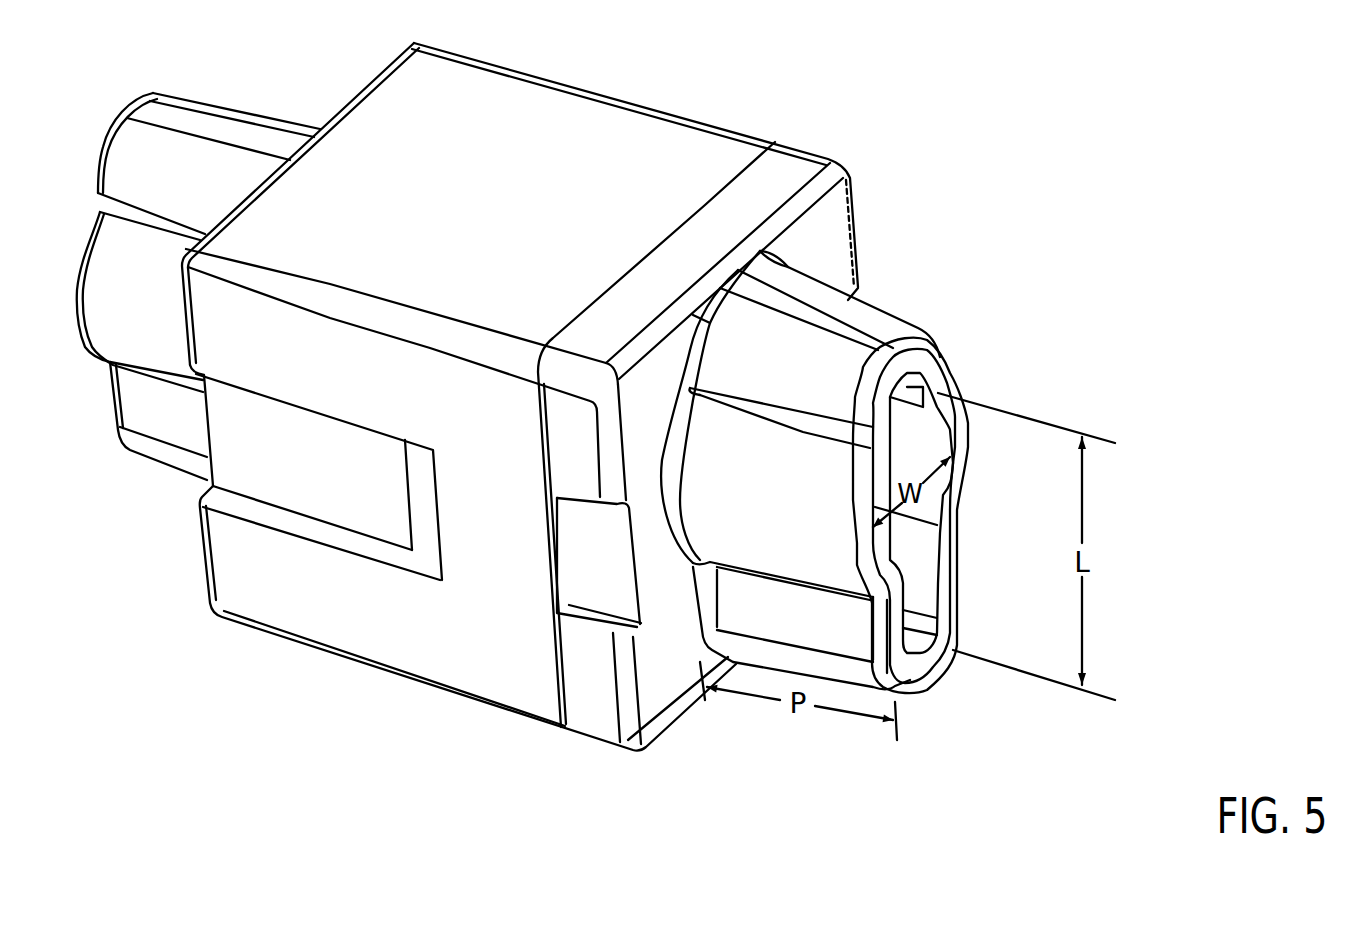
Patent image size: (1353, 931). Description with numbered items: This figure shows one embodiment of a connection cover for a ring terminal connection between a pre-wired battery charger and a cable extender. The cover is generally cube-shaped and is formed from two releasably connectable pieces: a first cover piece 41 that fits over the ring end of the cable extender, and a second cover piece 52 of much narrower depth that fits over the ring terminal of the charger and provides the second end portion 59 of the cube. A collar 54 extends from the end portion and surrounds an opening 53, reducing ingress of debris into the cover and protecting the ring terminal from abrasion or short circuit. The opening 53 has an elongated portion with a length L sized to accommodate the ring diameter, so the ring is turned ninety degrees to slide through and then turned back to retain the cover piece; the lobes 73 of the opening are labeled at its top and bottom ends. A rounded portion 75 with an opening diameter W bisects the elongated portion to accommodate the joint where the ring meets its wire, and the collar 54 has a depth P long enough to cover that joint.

The first cover piece 41 is at (605, 135).
The second cover piece 52 is at (783, 175).
The second end portion 59 is at (838, 217).
The collar 54 is at (870, 320).
The opening 53 is at (920, 423).
The lobe of keyed opening 73 is at (910, 387).
The rounded portion 75 is at (940, 485).